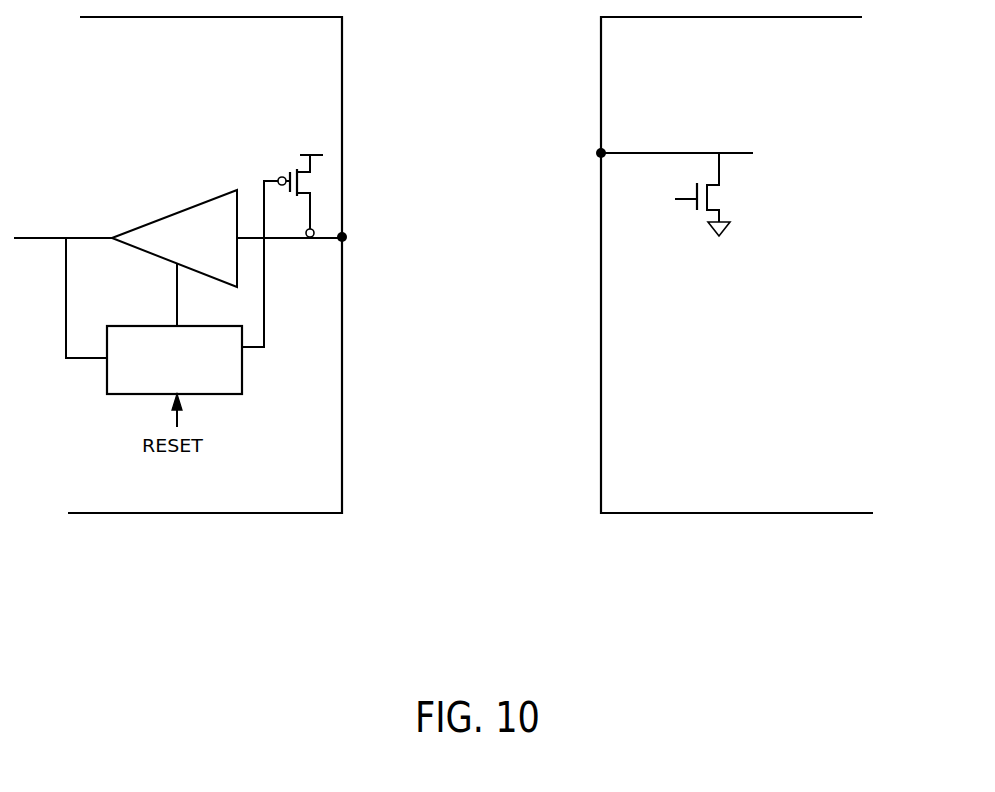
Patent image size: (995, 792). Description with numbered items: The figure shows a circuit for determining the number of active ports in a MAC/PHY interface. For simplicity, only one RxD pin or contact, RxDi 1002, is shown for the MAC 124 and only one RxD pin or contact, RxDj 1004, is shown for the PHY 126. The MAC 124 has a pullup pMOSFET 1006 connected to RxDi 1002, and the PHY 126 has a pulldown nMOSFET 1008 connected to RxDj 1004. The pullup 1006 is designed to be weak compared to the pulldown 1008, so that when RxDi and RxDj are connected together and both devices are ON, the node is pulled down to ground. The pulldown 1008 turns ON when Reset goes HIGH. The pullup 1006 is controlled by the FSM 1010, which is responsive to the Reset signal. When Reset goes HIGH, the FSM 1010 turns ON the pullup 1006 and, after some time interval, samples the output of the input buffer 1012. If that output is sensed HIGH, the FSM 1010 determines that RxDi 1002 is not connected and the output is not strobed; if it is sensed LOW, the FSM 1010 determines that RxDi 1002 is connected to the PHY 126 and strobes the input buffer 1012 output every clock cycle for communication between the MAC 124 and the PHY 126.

The MAC 124 is at (162, 505).
The PHY 126 is at (687, 507).
The RxDi 1002 is at (344, 231).
The RxDj 1004 is at (600, 150).
The pullup pMOSFET 1006 is at (300, 183).
The pulldown nMOSFET 1008 is at (723, 197).
The FSM 1010 is at (235, 377).
The input buffer 1012 is at (202, 200).